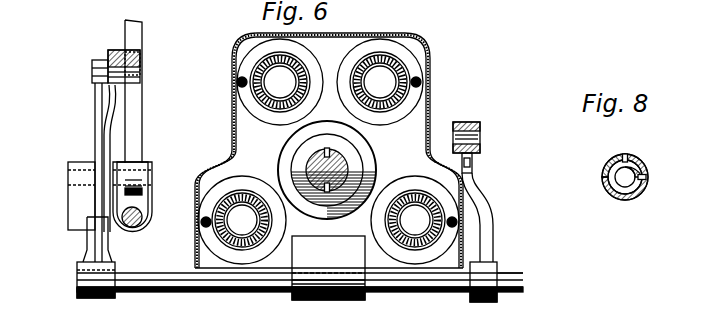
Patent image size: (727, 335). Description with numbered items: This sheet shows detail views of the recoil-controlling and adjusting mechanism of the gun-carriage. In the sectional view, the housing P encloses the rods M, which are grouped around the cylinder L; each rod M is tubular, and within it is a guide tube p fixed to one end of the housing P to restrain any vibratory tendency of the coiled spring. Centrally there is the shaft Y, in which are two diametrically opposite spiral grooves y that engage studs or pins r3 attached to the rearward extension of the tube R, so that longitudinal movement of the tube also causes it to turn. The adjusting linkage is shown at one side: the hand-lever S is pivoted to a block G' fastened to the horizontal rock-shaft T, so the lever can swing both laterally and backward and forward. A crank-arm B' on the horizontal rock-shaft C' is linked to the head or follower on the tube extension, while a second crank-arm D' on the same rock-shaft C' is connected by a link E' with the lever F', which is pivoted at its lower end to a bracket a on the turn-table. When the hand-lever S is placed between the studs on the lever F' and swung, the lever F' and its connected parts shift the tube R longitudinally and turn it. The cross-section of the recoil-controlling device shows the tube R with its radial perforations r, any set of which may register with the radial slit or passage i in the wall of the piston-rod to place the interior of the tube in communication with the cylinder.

In FIG. 6, the housing P is at (419, 47).
In FIG. 6, the tube p is at (352, 70).
In FIG. 6, the rod M is at (347, 99).
In FIG. 6, the shaft Y is at (364, 170).
In FIG. 6, the spiral groove y is at (310, 158).
In FIG. 6, the stud or pin r3 is at (333, 152).
In FIG. 6, the horizontal rock-shaft C' is at (300, 295).
In FIG. 6, the crank-arm B' is at (489, 212).
In FIG. 6, the hand-lever S is at (133, 118).
In FIG. 6, the cylinder L is at (141, 78).
In FIG. 6, the lever F' is at (89, 161).
In FIG. 6, the link E' is at (84, 158).
In FIG. 6, the bracket a is at (77, 200).
In FIG. 6, the block G' is at (146, 197).
In FIG. 6, the horizontal rock-shaft T is at (143, 220).
In FIG. 6, the crank-arm D' is at (108, 257).
In FIG. 8, the tube R is at (619, 197).
In FIG. 8, the radial slit or passage i is at (625, 156).
In FIG. 8, the radial passage or perforation r is at (640, 168).